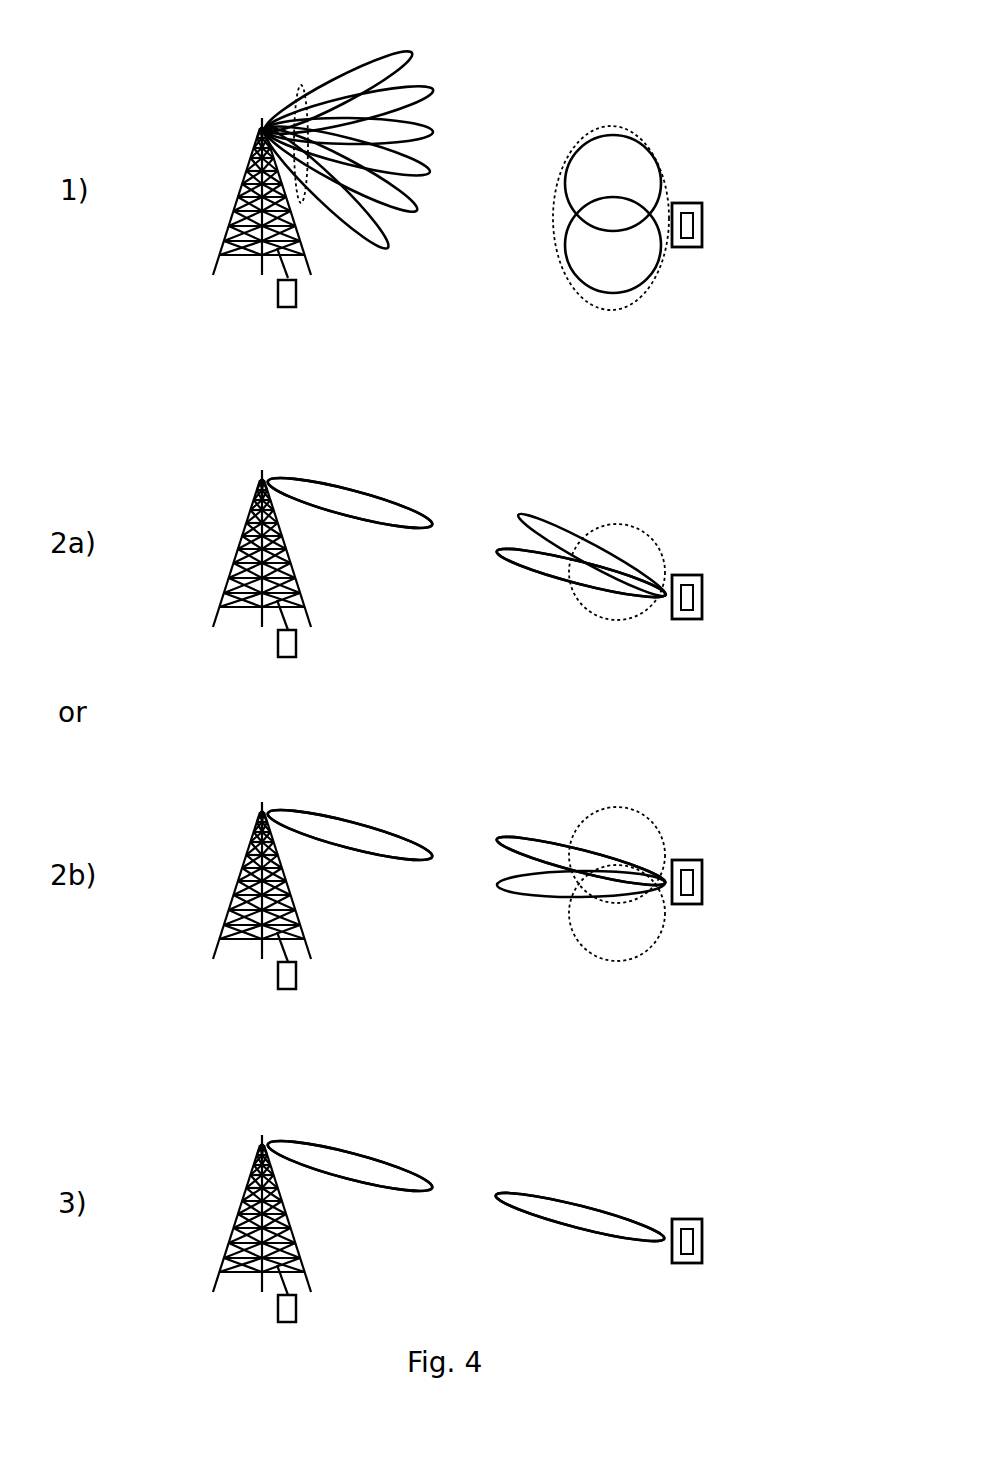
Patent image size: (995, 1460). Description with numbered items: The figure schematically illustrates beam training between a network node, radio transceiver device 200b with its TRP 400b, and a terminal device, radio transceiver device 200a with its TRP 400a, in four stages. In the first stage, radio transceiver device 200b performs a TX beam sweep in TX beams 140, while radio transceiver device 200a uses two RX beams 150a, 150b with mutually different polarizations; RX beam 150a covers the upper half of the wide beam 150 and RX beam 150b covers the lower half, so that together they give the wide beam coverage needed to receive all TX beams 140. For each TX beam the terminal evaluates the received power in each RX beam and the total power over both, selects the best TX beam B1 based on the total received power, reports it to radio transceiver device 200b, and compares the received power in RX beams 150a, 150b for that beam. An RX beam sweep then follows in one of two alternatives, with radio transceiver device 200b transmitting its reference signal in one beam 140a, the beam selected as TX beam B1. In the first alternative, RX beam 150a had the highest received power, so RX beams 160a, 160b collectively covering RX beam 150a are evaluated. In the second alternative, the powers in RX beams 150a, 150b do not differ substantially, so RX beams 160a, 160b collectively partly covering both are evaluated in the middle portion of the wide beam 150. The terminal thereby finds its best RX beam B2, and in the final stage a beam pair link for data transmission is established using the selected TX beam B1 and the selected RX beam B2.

The TX beams 140 is at (300, 87).
The beam 140a is at (300, 488).
The TRP 400b is at (258, 134).
The radio transceiver device 200b is at (278, 293).
The TX beam B1 is at (432, 174).
The wide beam 150 is at (553, 217).
The RX beam 150a is at (598, 135).
The RX beam 150b is at (578, 293).
The TRP 400a is at (702, 218).
The radio transceiver device 200a is at (690, 249).
The RX beam 160a is at (517, 572).
The RX beam 160b is at (558, 522).
The RX beam B2 is at (503, 550).